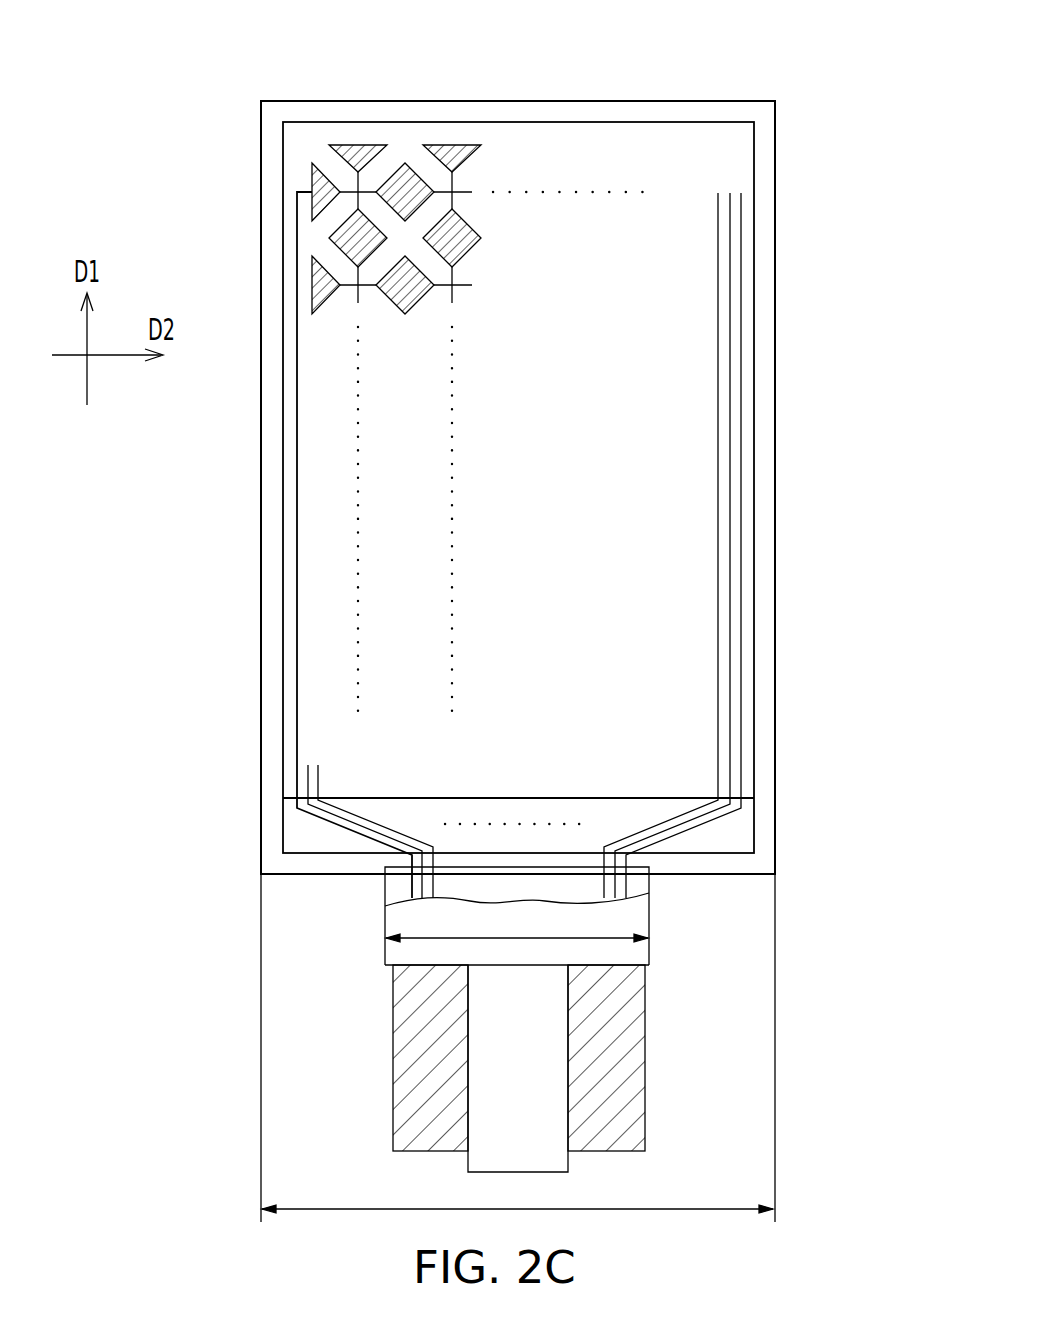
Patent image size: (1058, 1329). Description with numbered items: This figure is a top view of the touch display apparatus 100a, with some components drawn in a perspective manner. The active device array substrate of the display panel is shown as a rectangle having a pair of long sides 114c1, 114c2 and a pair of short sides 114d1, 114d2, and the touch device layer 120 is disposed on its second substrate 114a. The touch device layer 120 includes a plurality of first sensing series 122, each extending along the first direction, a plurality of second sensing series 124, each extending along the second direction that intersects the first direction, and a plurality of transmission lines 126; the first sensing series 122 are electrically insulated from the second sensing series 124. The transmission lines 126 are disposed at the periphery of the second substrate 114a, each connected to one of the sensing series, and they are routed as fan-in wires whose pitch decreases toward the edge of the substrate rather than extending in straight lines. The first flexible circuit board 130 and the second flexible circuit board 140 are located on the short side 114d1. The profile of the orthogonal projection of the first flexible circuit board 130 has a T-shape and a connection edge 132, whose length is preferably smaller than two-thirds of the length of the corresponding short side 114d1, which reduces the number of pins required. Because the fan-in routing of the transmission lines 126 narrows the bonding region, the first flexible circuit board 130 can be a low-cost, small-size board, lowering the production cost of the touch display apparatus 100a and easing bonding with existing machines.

The touch display apparatus 100a is at (521, 618).
The second substrate 114a is at (768, 328).
The long side 114c1 is at (261, 560).
The long side 114c2 is at (777, 562).
The short side 114d1 is at (325, 877).
The short side 114d2 is at (735, 102).
The touch device layer 120 is at (447, 451).
The first sensing series 122 is at (405, 180).
The second sensing series 124 is at (303, 172).
The transmission lines 126 is at (297, 250).
The first flexible circuit board 130 is at (558, 1037).
The connection edge 132 is at (587, 864).
The second flexible circuit board 140 is at (617, 1082).